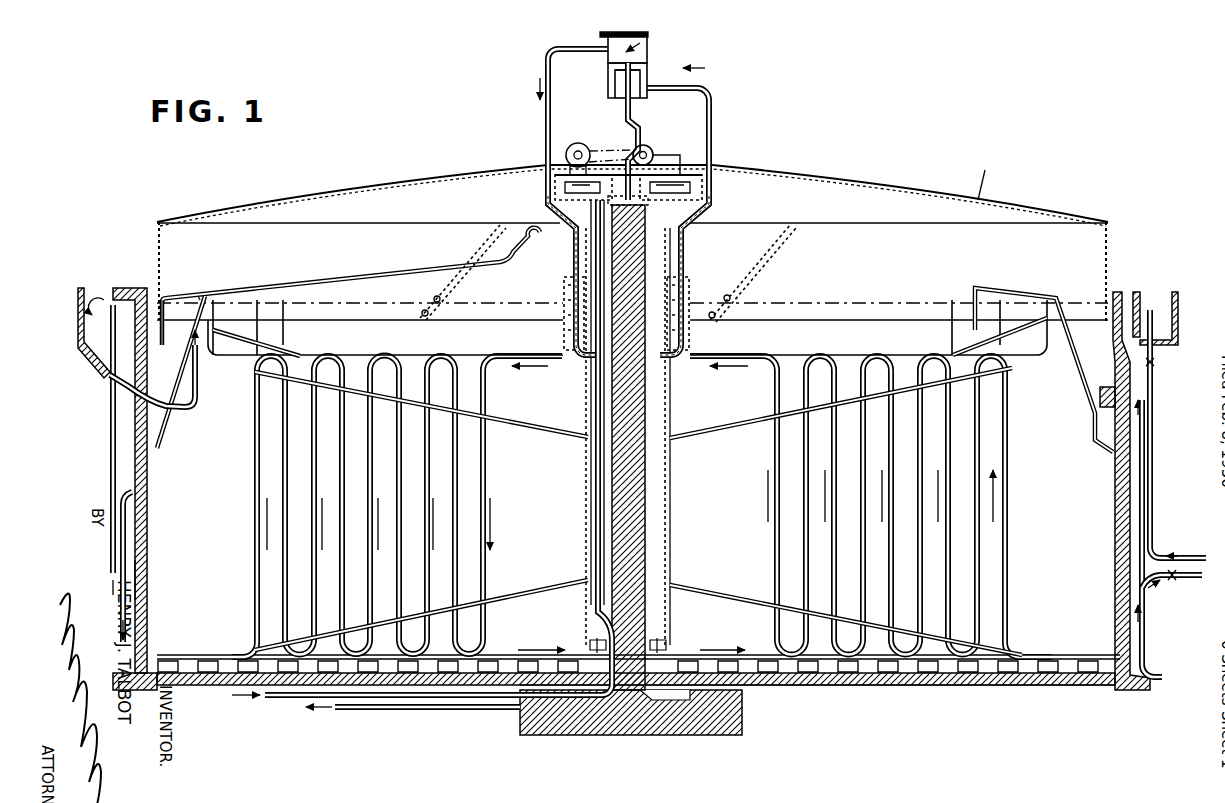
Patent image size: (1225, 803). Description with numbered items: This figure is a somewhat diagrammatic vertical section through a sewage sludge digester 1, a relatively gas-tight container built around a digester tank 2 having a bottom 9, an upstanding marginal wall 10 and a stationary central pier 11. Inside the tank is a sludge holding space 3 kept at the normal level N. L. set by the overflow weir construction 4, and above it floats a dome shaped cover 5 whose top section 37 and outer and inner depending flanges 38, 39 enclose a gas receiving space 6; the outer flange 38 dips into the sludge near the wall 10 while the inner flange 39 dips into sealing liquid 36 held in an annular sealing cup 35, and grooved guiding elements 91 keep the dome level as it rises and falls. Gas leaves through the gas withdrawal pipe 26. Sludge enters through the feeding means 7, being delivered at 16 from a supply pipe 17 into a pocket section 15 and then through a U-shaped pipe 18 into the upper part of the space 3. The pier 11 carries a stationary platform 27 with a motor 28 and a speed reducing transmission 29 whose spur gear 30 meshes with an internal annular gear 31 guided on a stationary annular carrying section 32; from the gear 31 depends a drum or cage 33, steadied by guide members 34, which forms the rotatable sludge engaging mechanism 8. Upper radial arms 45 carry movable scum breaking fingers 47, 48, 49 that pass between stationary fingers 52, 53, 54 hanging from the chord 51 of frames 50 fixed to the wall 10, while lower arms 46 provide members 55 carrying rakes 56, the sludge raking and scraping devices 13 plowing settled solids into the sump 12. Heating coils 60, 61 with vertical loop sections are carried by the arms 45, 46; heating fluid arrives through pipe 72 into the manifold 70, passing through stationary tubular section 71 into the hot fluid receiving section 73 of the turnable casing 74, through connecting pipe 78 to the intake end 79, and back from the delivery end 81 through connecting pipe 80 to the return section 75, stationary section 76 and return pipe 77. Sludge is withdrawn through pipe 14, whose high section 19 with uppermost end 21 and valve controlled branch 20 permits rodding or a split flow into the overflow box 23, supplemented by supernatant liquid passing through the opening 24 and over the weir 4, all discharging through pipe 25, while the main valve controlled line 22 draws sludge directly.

The digester 1 is at (140, 254).
The digester tank 2 is at (147, 565).
The sludge receiving and holding space 3 is at (721, 507).
The overflow weir construction 4 is at (1152, 308).
The floating dome shaped cover 5 is at (840, 186).
The gas receiving and collecting space 6 is at (632, 223).
The feeding means 7 is at (96, 361).
The rotatable sludge engaging mechanism 8 is at (588, 463).
The bottom 9 is at (940, 688).
The upstanding marginal wall 10 is at (148, 532).
The pier 11 is at (637, 552).
The sump 12 is at (684, 697).
The sludge raking and scraping devices 13 is at (1020, 653).
The sludge withdrawal pipe 14 is at (800, 688).
The pocket section 15 is at (96, 340).
The sludge delivery point 16 is at (88, 305).
The supply pipe 17 is at (110, 455).
The U-shaped pipe 18 is at (198, 398).
The high section 19 is at (1148, 430).
The valve controlled branch 20 is at (1156, 372).
The uppermost end 21 is at (1137, 298).
The main valve controlled line 22 is at (1168, 580).
The overflow box 23 is at (1168, 318).
The opening 24 is at (1108, 345).
The discharge pipe 25 is at (1152, 475).
The gas withdrawal pipe 26 is at (330, 282).
The stationary platform 27 is at (683, 172).
The motor 28 is at (578, 143).
The speed reducing and power transmission mechanism 29 is at (645, 145).
The spur gear 30 is at (662, 198).
The internal annular gear 31 is at (700, 186).
The stationary annular carrying section 32 is at (565, 222).
The drum 33 is at (668, 490).
The guide members 34 is at (658, 646).
The sealing cup 35 is at (690, 285).
The sealing liquid 36 is at (565, 290).
The top section 37 is at (992, 185).
The outer depending flange 38 is at (160, 246).
The inner depending flange 39 is at (698, 208).
The upper radially extending arm 45 is at (857, 356).
The lower radially extending arm 46 is at (745, 660).
The scum breaking finger 47 is at (632, 318).
The scum breaking finger 48 is at (630, 335).
The scum breaking finger 49 is at (1030, 268).
The stationary frame 50 is at (170, 298).
The chord 51 is at (200, 296).
The stationary scum breaking finger 52 is at (240, 322).
The stationary scum breaking finger 53 is at (283, 305).
The stationary scum breaking finger 54 is at (185, 355).
The rake carrying member 55 is at (510, 660).
The rake 56 is at (210, 668).
The heating coil 60 is at (484, 567).
The heating coil 61 is at (774, 567).
The manifold 70 is at (608, 64).
The stationary tubular section 71 is at (642, 70).
The heating fluid supply pipe 72 is at (292, 699).
The hot fluid receiving section 73 is at (641, 46).
The turnable casing 74 is at (602, 35).
The return fluid receiving section 75 is at (622, 82).
The stationary tubular section 76 is at (624, 106).
The return pipe 77 is at (401, 709).
The connecting pipe 78 is at (546, 115).
The intake end 79 is at (494, 360).
The connecting pipe 80 is at (713, 130).
The delivery end 81 is at (752, 360).
The guiding element 91 is at (468, 240).